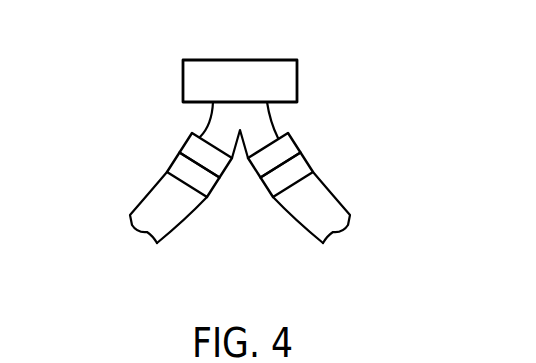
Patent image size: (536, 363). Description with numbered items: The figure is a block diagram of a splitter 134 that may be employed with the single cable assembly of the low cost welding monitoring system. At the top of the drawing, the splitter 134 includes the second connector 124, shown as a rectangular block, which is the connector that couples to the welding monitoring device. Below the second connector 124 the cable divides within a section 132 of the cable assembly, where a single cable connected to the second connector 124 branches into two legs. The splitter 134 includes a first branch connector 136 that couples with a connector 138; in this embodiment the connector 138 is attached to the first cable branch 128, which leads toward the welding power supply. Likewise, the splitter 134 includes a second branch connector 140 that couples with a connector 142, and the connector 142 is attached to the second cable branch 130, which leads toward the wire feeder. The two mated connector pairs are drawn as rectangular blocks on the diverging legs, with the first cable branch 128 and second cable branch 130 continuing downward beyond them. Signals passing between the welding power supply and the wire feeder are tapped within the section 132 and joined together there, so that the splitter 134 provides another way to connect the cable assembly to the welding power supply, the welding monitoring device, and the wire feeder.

The second connector 124 is at (297, 80).
The section 132 is at (151, 95).
The splitter 134 is at (248, 115).
The first branch connector 136 is at (196, 151).
The connector 138 is at (180, 172).
The second branch connector 140 is at (284, 150).
The connector 142 is at (298, 172).
The first cable branch 128 is at (178, 220).
The second cable branch 130 is at (300, 218).